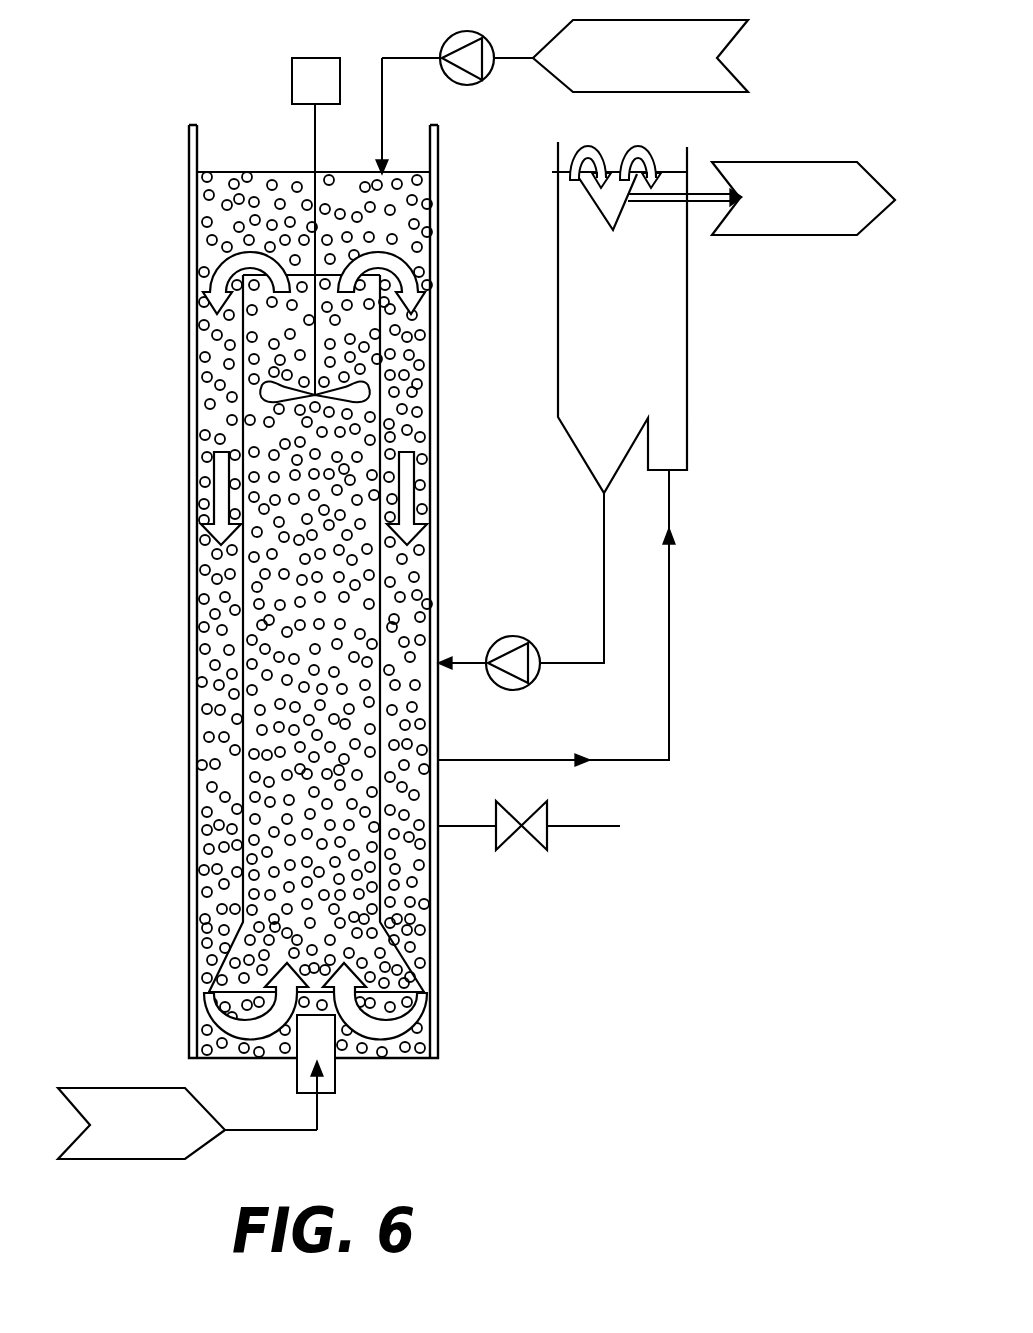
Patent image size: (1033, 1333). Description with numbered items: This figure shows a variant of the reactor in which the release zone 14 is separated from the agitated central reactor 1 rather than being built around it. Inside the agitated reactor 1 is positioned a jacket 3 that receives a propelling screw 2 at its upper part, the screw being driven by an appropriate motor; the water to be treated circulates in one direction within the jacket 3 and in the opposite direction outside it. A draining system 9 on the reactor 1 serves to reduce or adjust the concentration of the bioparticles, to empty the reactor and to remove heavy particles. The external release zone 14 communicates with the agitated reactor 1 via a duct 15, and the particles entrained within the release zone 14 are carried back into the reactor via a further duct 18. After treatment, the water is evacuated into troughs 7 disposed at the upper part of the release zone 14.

The agitated central reactor 1 is at (189, 542).
The propelling screw 2 is at (282, 400).
The jacket 3 is at (243, 733).
The troughs 7 is at (605, 220).
The draining system 9 is at (547, 835).
The release zone 14 is at (650, 347).
The duct 15 is at (669, 614).
The duct 18 is at (604, 548).